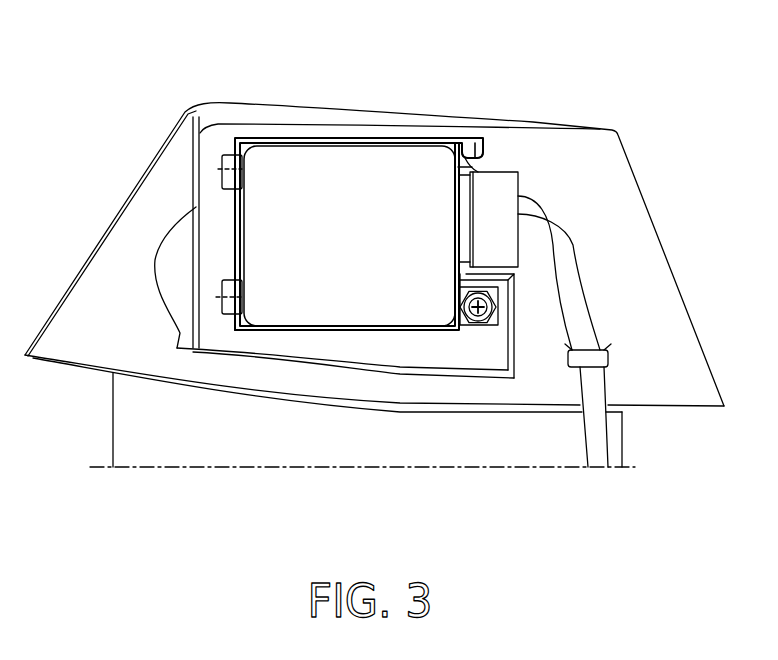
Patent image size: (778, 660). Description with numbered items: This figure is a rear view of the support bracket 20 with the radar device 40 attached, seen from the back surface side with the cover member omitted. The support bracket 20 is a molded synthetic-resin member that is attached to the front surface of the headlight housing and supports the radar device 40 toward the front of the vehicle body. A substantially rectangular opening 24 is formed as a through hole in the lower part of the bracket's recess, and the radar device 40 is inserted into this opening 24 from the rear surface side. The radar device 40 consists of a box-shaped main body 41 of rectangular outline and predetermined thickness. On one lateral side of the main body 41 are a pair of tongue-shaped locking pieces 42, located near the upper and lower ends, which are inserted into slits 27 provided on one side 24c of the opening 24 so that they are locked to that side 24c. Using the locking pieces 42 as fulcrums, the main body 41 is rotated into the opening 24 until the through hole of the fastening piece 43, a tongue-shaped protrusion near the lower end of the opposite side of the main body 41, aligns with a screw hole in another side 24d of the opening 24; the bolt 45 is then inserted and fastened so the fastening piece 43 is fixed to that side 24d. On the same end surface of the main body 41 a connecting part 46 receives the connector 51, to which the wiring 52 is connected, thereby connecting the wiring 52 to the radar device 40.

The support bracket 20 is at (629, 155).
The opening 24 is at (399, 145).
The one side of the opening 24c is at (243, 238).
The another side of the opening 24d is at (476, 163).
The slit 27 is at (240, 167).
The radar device 40 is at (343, 141).
The main body 41 is at (305, 153).
The locking piece 42 is at (228, 154).
The fastening piece 43 is at (458, 325).
The bolt 45 is at (498, 303).
The connecting part 46 is at (483, 176).
The connector 51 is at (515, 182).
The wiring 52 is at (573, 274).